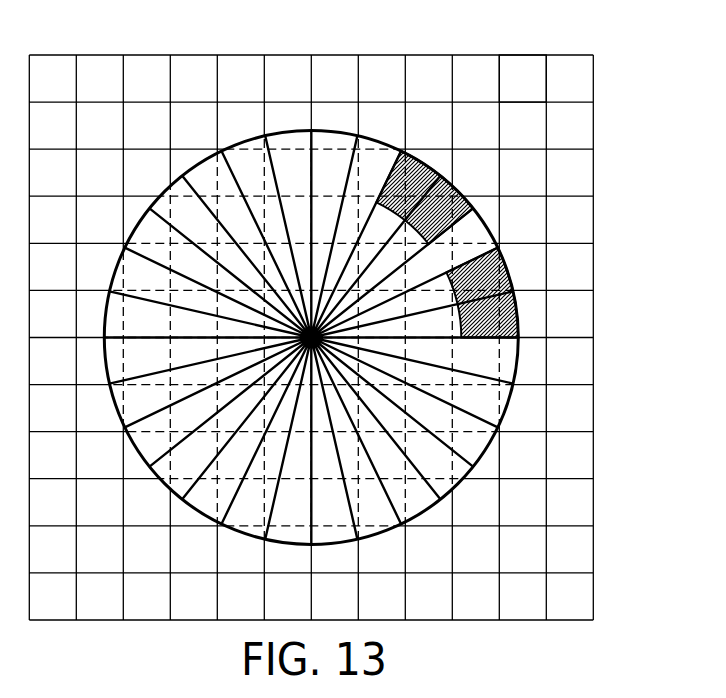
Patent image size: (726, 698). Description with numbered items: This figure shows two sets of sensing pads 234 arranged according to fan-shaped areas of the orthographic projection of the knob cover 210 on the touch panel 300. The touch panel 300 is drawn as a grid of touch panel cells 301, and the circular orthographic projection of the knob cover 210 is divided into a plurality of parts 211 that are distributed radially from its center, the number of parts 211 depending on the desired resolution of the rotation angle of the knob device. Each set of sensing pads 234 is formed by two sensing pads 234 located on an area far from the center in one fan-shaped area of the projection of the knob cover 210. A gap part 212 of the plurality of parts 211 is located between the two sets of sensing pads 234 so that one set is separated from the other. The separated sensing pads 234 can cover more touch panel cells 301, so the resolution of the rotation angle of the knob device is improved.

The knob cover 210 is at (199, 161).
The parts of the orthographic projection of the knob cover 211 is at (331, 153).
The gap part 212 is at (468, 237).
The sensing pads 234 is at (427, 195).
The touch panel 300 is at (571, 55).
The touch panel cells 301 is at (525, 83).